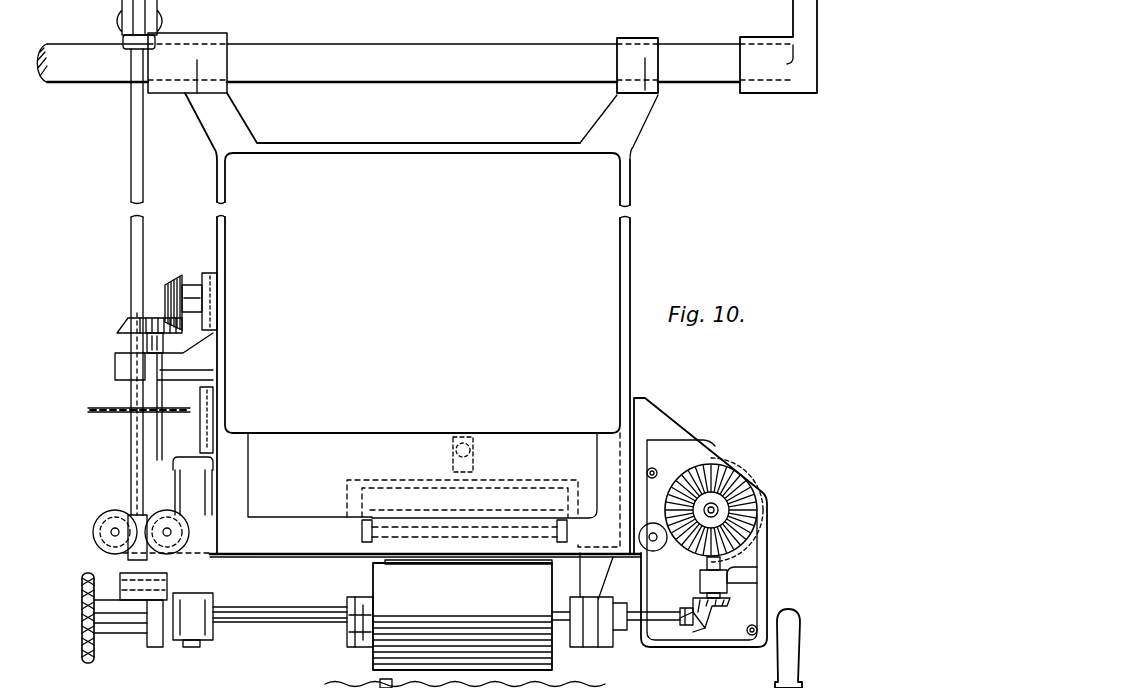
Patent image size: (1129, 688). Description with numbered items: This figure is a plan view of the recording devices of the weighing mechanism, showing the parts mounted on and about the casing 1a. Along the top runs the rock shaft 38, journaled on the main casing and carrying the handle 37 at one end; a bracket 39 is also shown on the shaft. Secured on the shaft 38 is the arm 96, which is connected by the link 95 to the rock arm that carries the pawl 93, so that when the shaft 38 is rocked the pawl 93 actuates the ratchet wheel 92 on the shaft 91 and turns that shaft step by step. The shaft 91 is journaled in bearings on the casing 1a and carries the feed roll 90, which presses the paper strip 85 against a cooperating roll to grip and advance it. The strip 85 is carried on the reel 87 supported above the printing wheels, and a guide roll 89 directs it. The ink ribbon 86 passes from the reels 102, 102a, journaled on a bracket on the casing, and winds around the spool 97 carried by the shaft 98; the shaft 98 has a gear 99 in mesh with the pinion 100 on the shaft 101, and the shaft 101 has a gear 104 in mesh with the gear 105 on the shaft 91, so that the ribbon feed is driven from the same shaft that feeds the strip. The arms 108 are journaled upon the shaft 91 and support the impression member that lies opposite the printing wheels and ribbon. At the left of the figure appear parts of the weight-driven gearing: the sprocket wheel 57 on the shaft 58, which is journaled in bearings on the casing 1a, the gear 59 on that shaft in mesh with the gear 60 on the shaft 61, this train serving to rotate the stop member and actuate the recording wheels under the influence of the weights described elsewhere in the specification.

The casing 1a is at (215, 185).
The handle 37 is at (793, 22).
The rock shaft 38 is at (537, 72).
The bracket 39 is at (644, 34).
The sprocket wheel 57 is at (108, 417).
The shaft 58 is at (157, 453).
The gear 59 is at (117, 327).
The gear 60 is at (160, 287).
The shaft 61 is at (195, 287).
The strip of paper 85 is at (427, 561).
The ink ribbon 86 is at (305, 553).
The reel 87 is at (616, 614).
The guide roll 89 is at (464, 537).
The feed roll 90 is at (462, 616).
The shaft 91 is at (275, 607).
The ratchet wheel 92 is at (186, 637).
The pawl 93 is at (157, 602).
The link 95 is at (133, 278).
The arm 96 is at (137, 10).
The spool 97 is at (677, 480).
The shaft 98 is at (715, 505).
The gear 99 is at (767, 505).
The pinion 100 is at (698, 557).
The shaft 101 is at (700, 567).
The reel 102 is at (167, 520).
The reel 102a is at (100, 518).
The gear 104 is at (740, 602).
The gear 105 is at (690, 633).
The arms 108 is at (341, 655).